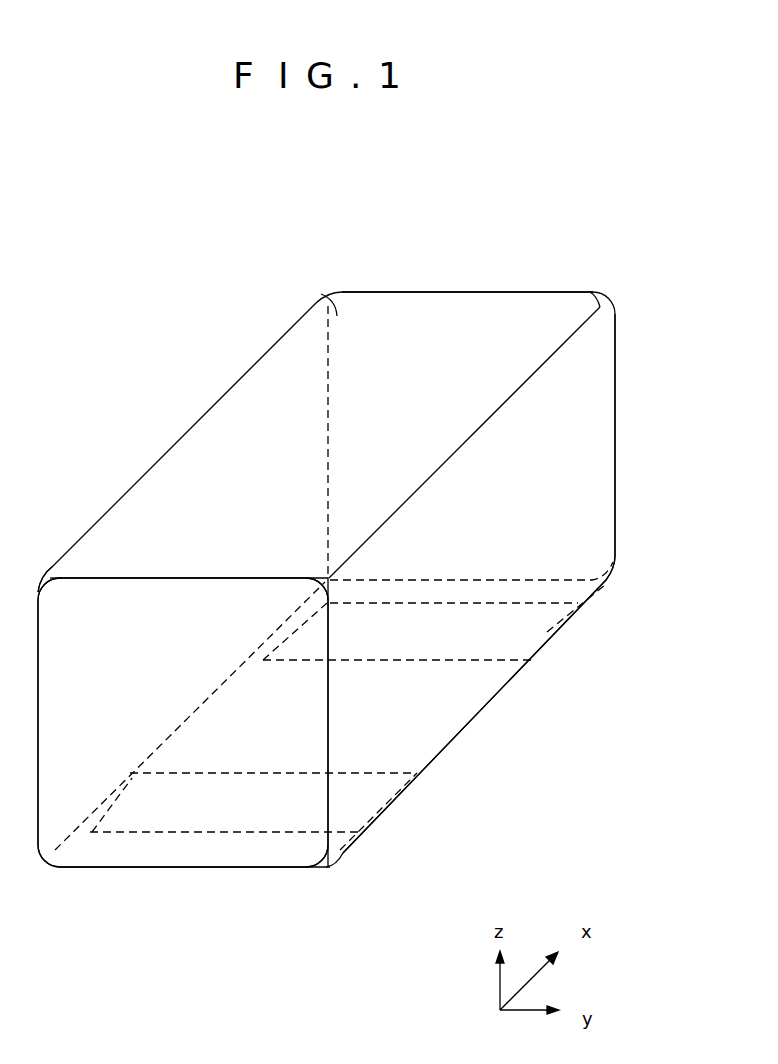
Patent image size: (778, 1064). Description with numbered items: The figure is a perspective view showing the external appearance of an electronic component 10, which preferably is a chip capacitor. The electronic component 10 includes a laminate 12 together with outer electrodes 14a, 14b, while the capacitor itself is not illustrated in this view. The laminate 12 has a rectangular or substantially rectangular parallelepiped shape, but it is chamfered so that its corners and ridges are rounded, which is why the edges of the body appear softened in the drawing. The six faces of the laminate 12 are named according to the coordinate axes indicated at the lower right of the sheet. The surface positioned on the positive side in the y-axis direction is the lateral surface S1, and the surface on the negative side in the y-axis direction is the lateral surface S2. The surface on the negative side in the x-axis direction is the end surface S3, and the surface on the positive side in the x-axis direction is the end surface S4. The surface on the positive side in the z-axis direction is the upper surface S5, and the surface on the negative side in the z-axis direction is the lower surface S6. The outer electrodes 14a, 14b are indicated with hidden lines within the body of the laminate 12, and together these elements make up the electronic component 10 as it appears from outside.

The electronic component 10 is at (160, 264).
The laminate 12 is at (497, 286).
The outer electrode 14a is at (367, 803).
The outer electrode 14b is at (532, 630).
The lateral surface S1 is at (463, 645).
The lateral surface S2 is at (170, 507).
The end surface S3 is at (188, 758).
The end surface S4 is at (523, 323).
The upper surface S5 is at (262, 442).
The lower surface S6 is at (413, 713).